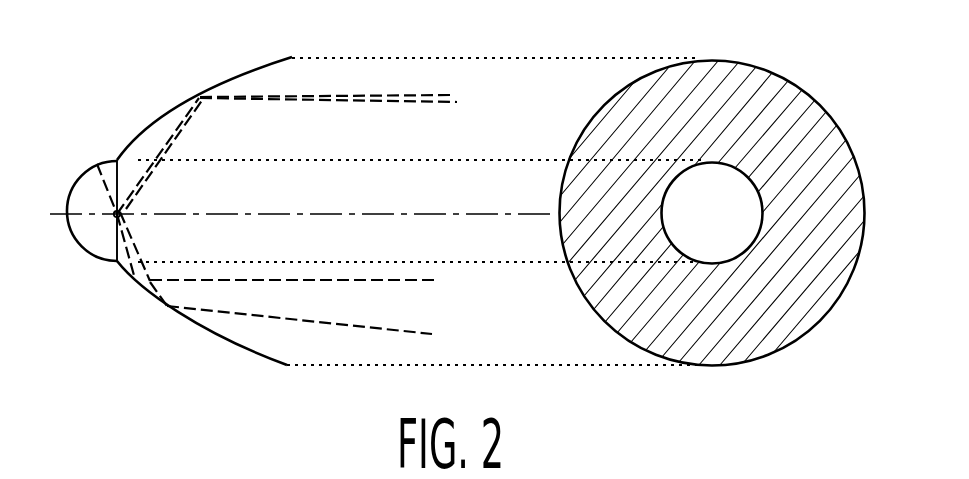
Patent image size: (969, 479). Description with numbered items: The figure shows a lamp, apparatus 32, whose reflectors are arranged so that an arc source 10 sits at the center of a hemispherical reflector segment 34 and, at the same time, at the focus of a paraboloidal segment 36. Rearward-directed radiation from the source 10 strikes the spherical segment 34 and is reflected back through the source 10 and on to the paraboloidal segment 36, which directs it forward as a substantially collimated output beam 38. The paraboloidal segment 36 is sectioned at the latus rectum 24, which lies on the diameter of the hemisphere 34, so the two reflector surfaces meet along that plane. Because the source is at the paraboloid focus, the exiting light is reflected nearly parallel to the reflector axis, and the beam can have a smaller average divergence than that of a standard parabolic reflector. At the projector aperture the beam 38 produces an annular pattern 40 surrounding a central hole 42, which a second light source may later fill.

The arc source 10 is at (115, 216).
The latus rectum 24 is at (113, 130).
The apparatus 32 is at (419, 19).
The hemispherical reflector segment 34 is at (76, 178).
The paraboloidal segment 36 is at (217, 336).
The collimated output beam 38 is at (433, 93).
The annular pattern 40 is at (733, 77).
The central hole 42 is at (718, 242).